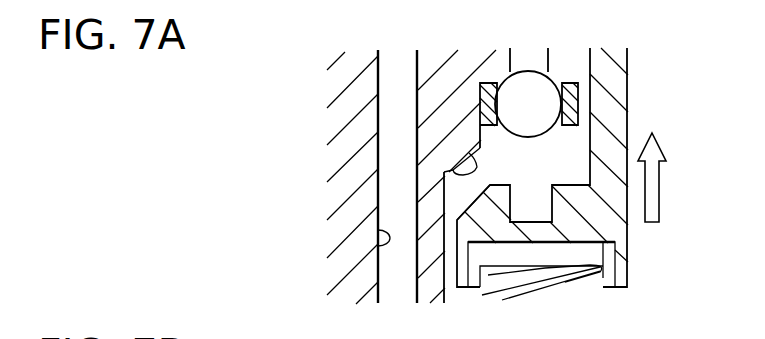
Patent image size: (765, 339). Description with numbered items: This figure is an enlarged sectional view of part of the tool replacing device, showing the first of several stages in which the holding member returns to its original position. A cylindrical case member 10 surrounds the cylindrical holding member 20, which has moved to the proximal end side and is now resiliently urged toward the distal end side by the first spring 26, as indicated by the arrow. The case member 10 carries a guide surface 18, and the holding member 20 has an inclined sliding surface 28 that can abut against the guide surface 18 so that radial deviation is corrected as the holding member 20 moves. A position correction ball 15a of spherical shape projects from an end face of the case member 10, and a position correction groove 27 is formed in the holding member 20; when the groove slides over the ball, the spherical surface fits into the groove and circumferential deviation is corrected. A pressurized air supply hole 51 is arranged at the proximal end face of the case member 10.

The case member 10 is at (458, 73).
The guide surface 18 is at (455, 173).
The sliding surface 28 is at (483, 215).
The pressurized air supply hole 51 is at (377, 244).
The position correction ball 15a is at (538, 103).
The holding member 20 is at (622, 232).
The first spring 26 is at (570, 280).
The position correction groove 27 is at (552, 200).